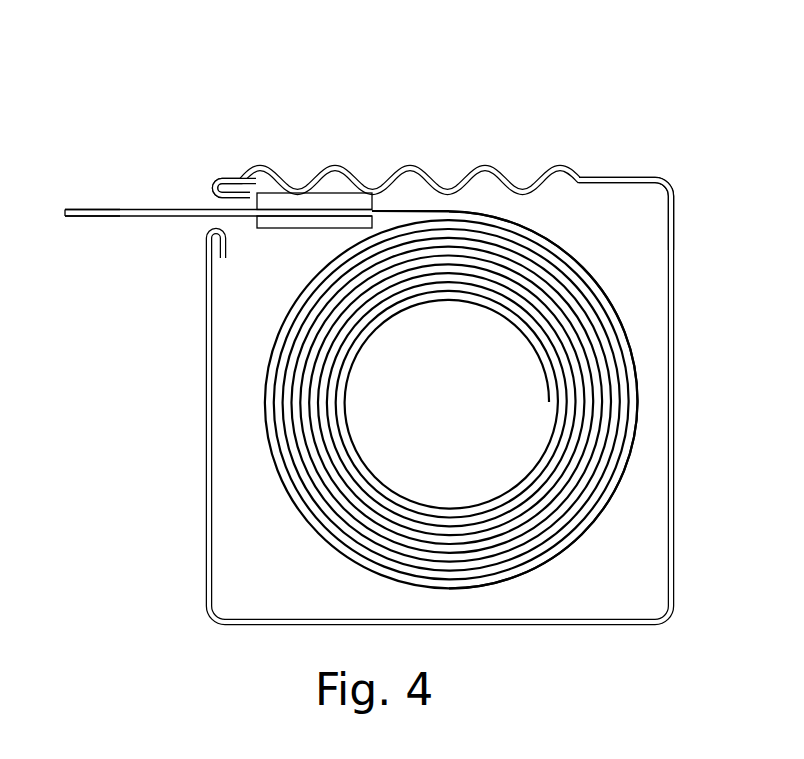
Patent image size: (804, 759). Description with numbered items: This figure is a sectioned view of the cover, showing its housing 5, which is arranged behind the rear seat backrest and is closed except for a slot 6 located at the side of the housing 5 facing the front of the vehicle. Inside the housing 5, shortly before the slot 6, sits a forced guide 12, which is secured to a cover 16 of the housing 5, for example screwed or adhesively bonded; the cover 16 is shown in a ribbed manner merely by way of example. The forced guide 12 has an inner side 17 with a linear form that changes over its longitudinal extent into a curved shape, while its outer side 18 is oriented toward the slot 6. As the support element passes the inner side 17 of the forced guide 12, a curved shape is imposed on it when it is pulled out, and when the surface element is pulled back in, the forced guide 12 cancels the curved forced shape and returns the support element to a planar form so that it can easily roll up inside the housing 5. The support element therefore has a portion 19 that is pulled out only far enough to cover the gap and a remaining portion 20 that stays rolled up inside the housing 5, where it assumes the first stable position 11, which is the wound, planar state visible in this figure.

The housing 5 is at (313, 118).
The cover 16 is at (565, 168).
The outer side 18 is at (250, 188).
The inner side 17 is at (378, 200).
The slot 6 is at (206, 203).
The portion 19 is at (66, 224).
The forced guide 12 is at (270, 234).
The first stable position 11 is at (264, 410).
The portion 20 is at (298, 498).